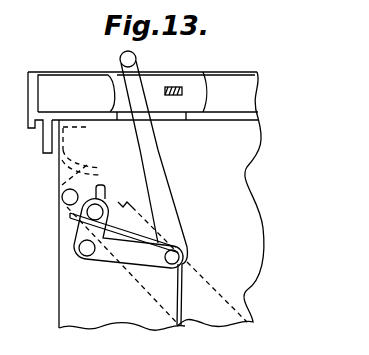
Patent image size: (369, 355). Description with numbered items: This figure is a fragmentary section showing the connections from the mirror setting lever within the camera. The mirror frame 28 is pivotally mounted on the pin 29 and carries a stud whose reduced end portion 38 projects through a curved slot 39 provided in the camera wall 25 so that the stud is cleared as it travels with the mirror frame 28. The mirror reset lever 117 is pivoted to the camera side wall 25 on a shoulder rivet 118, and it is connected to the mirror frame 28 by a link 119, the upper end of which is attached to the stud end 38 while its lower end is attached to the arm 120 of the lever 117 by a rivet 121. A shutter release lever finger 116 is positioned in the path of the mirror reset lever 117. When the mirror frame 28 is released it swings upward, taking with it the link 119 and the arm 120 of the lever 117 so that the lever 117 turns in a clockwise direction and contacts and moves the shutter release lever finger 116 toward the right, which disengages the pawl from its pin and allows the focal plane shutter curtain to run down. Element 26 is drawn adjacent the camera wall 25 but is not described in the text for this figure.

The camera wall 25 is at (237, 170).
The housing base 26 is at (213, 120).
The mirror frame 28 is at (192, 278).
The pin 29 is at (62, 195).
The reduced end portion 38 is at (101, 207).
The curved slot 39 is at (100, 185).
The shutter release lever finger 116 is at (178, 87).
The mirror reset lever 117 is at (160, 187).
The shoulder rivet 118 is at (179, 258).
The link 119 is at (82, 230).
The arm 120 is at (111, 250).
The rivet 121 is at (79, 252).